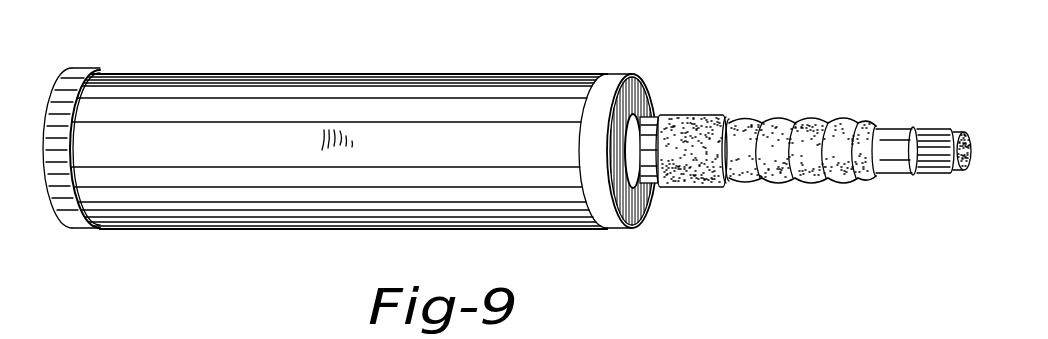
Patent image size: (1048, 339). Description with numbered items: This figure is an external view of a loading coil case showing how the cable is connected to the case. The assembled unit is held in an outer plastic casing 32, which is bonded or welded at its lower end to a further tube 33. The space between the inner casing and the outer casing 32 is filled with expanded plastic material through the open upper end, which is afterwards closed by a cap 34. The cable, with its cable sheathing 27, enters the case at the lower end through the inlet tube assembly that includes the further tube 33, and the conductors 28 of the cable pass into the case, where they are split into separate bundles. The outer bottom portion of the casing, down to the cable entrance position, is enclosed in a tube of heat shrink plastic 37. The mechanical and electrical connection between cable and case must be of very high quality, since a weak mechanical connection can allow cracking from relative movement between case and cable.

The outer plastic casing 32 is at (466, 46).
The cap 34 is at (93, 74).
The further tube 33 is at (638, 89).
The tube of heat shrink plastic 37 is at (873, 123).
The cable sheathing 27 is at (937, 131).
The conductors 28 is at (970, 148).